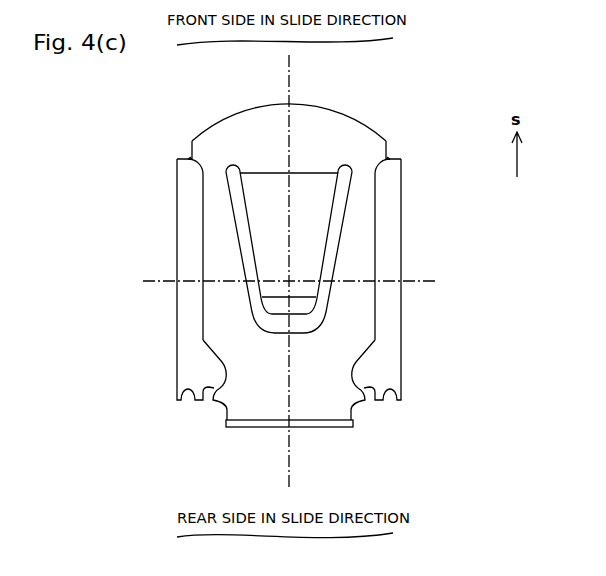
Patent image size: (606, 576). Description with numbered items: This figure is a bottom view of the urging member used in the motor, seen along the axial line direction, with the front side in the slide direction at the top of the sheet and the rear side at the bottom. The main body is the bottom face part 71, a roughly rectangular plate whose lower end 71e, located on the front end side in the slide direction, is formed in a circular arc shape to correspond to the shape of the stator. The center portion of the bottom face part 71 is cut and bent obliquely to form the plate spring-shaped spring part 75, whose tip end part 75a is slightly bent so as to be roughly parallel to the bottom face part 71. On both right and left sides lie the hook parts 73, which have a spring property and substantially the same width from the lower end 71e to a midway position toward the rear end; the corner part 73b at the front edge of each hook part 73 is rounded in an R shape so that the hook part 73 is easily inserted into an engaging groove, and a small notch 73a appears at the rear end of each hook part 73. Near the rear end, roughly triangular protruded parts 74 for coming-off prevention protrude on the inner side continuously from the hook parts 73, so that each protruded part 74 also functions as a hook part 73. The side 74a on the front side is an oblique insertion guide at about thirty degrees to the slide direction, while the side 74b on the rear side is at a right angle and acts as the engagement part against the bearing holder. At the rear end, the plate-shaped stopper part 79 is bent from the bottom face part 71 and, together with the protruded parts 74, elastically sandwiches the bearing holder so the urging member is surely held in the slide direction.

The bottom face part 71 is at (293, 107).
The lower end of the bottom face part 71e is at (310, 104).
The hook part 73 is at (188, 240).
The rear notch of side flange 73a is at (178, 391).
The corner part 73b is at (191, 157).
The protruded part for coming-off prevention 74 is at (213, 373).
The side on the front side of the protruded part 74a is at (217, 359).
The side on the rear side of the protruded part 74b is at (213, 400).
The spring part 75 is at (311, 219).
The tip end part of the spring part 75a is at (305, 307).
The stopper part 79 is at (327, 427).